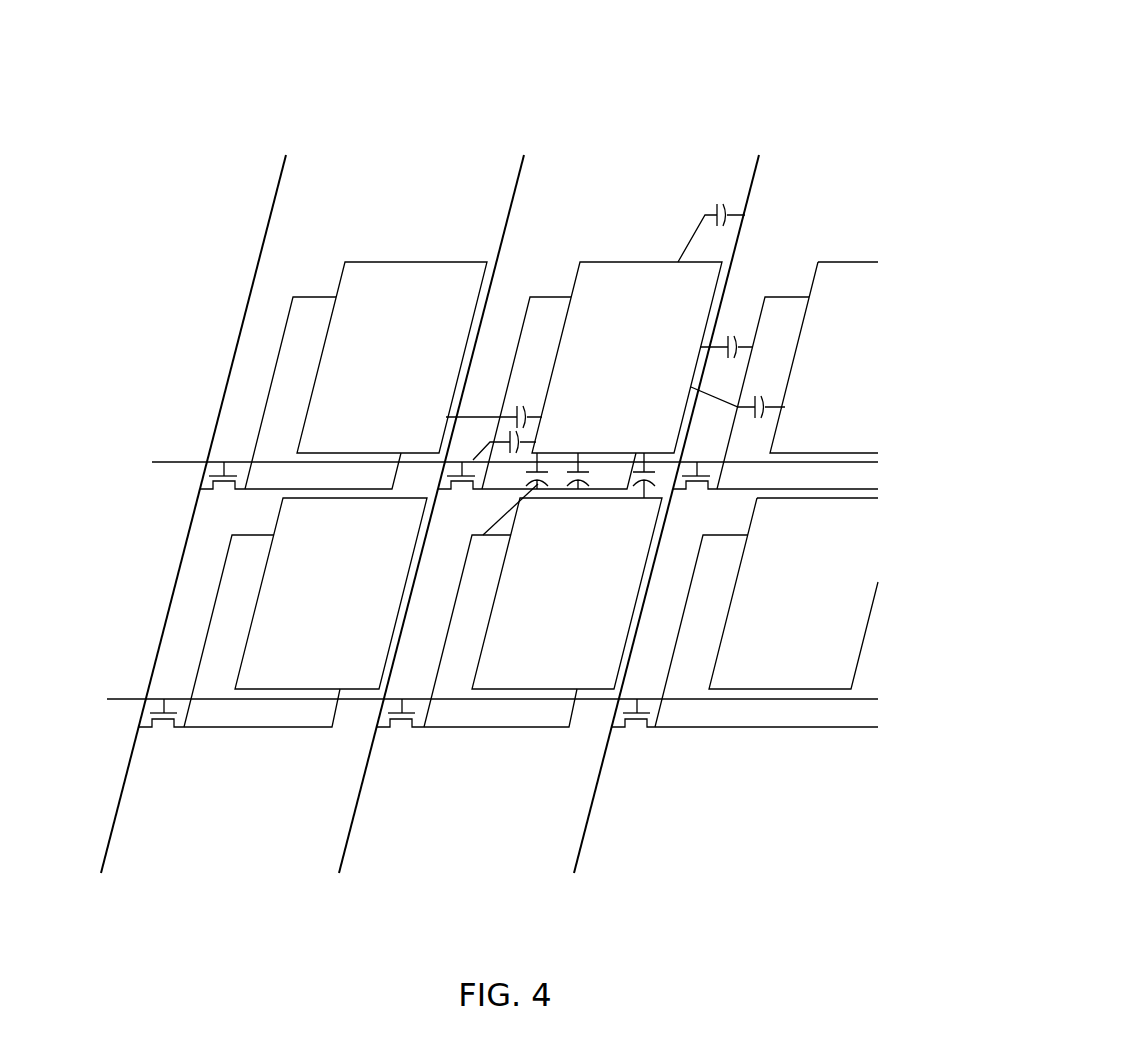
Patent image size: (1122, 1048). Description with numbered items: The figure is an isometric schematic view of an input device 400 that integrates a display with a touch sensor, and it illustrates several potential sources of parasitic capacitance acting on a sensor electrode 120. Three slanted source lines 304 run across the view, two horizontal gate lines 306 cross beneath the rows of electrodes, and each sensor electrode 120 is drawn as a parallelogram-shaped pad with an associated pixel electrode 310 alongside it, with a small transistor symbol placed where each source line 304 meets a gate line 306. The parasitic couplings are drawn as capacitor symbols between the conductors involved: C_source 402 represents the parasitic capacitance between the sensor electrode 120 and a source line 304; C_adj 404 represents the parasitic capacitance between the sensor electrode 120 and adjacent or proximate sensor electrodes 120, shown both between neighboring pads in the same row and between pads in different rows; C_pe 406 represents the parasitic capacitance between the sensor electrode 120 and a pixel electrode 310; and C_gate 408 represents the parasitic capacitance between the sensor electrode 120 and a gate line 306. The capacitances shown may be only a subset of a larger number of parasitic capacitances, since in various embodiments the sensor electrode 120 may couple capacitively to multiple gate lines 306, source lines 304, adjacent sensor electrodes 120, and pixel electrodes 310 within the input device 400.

The input device 400 is at (690, 75).
The source line 304 is at (272, 214).
The gate line 306 is at (180, 461).
The sensor electrode 120 is at (393, 307).
The pixel electrode 310 is at (295, 334).
The C_source 402 is at (717, 205).
The C_adj 404 is at (513, 406).
The C_pe 406 is at (597, 476).
The C_gate 408 is at (505, 436).